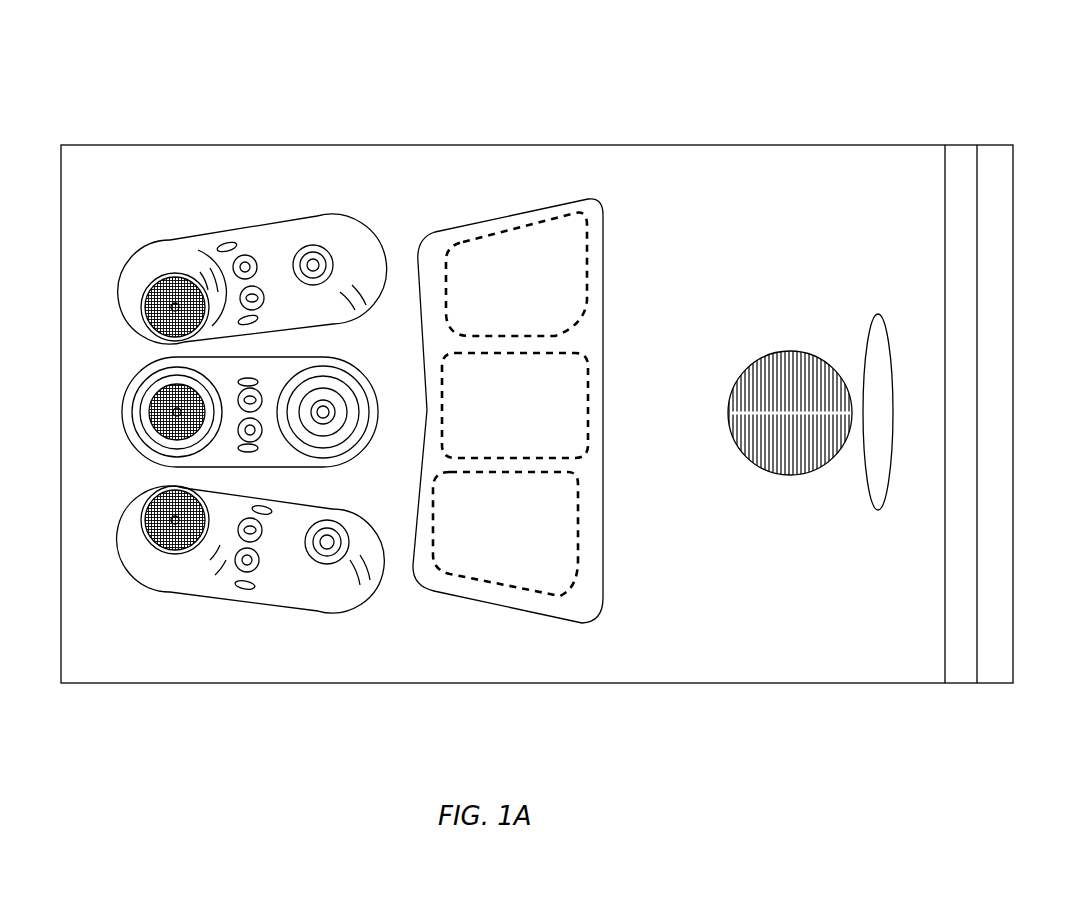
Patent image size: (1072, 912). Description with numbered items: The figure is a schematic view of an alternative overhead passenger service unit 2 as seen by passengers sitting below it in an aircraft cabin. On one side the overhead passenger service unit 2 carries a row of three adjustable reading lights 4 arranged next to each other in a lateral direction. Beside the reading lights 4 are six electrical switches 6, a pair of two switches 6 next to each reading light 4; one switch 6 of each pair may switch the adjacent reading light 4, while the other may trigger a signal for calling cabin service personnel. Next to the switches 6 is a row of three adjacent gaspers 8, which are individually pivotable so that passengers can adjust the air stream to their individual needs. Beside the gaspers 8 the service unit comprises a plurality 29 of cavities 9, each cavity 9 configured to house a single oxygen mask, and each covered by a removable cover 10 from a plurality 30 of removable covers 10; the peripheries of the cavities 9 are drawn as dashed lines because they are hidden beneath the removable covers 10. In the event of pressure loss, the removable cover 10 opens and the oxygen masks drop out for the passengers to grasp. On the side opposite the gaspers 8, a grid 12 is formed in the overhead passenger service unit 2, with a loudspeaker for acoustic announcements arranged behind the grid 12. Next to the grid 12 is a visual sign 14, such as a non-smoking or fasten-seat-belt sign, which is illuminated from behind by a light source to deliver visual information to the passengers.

The overhead passenger service unit 2 is at (910, 95).
The adjustable reading light 4 is at (172, 260).
The electrical switch 6 is at (247, 240).
The gasper 8 is at (326, 234).
The cavity 9 is at (531, 407).
The removable cover 10 is at (588, 310).
The grid 12 is at (800, 346).
The visual sign 14 is at (890, 358).
The plurality of cavities 29 is at (630, 634).
The plurality of removable covers 30 is at (680, 181).